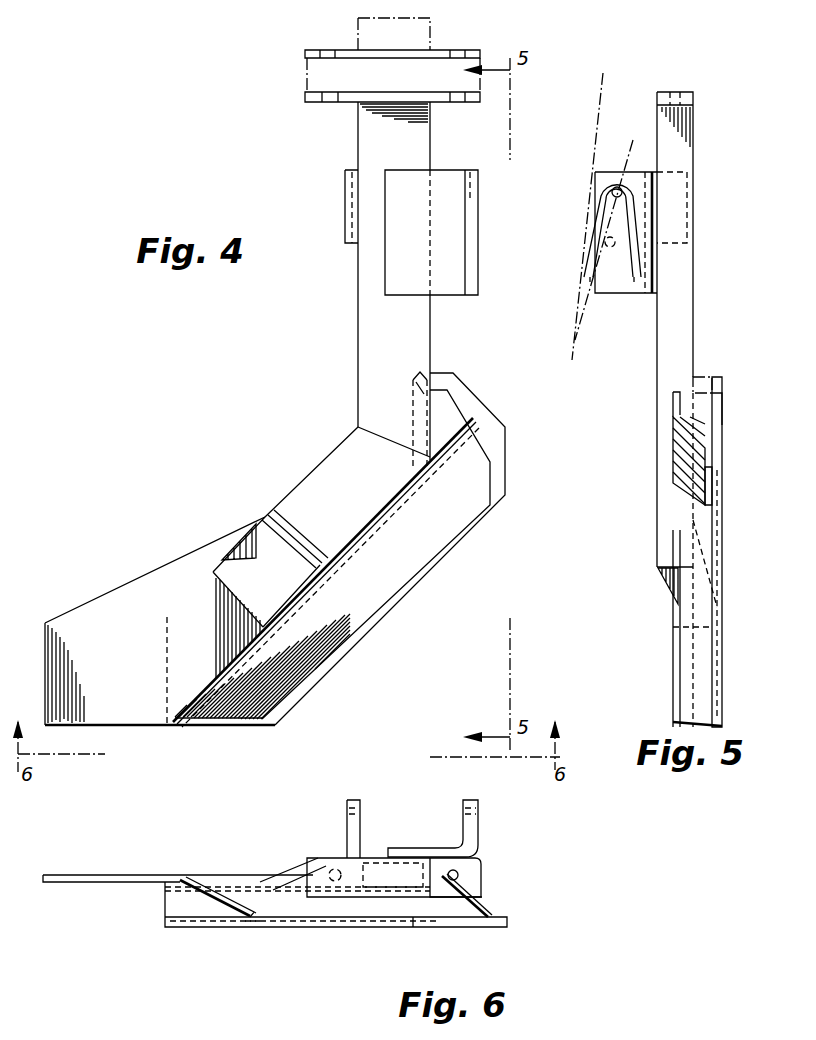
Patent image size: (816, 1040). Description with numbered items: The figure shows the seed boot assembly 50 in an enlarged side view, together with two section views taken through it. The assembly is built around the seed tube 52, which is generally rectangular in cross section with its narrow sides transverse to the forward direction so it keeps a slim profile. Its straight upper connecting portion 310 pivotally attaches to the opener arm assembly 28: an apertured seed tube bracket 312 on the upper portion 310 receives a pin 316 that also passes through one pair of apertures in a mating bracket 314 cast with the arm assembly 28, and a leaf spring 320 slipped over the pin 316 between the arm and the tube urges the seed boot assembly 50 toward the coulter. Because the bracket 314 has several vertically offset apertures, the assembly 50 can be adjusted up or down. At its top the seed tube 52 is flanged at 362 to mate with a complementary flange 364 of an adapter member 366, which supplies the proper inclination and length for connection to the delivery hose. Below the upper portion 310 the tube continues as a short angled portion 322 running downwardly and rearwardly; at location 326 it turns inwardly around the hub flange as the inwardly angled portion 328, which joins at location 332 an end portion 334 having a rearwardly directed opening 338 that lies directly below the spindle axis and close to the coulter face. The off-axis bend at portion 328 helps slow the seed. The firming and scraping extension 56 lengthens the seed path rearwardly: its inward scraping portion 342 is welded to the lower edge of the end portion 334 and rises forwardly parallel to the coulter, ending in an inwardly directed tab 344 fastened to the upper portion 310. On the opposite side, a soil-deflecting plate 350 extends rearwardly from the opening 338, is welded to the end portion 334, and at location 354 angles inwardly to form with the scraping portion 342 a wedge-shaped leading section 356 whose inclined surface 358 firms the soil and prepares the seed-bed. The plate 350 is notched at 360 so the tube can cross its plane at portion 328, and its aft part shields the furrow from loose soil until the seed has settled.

In FIG. 5, the opener arm assembly 28 is at (604, 95).
In FIG. 4, the seed boot assembly 50 is at (258, 340).
In FIG. 6, the seed boot assembly 50 is at (321, 950).
In FIG. 4, the seed tube 52 is at (412, 327).
In FIG. 5, the seed tube 52 is at (693, 240).
In FIG. 4, the firming and scraping extension 56 is at (95, 552).
In FIG. 5, the firming and scraping extension 56 is at (741, 600).
In FIG. 4, the upper connecting portion 310 is at (380, 130).
In FIG. 5, the upper connecting portion 310 is at (667, 320).
In FIG. 6, the upper connecting portion 310 is at (372, 860).
In FIG. 4, the seed tube bracket 312 is at (345, 198).
In FIG. 5, the seed tube bracket 312 is at (595, 175).
In FIG. 6, the seed tube bracket 312 is at (470, 800).
In FIG. 5, the mating bracket 314 is at (585, 285).
In FIG. 5, the pin 316 is at (617, 182).
In FIG. 5, the leaf spring 320 is at (601, 207).
In FIG. 4, the short angled portion 322 is at (345, 440).
In FIG. 5, the short angled portion 322 is at (660, 498).
In FIG. 6, the short angled portion 322 is at (335, 858).
In FIG. 4, the location just beyond the flange 326 is at (268, 515).
In FIG. 5, the location just beyond the flange 326 is at (657, 565).
In FIG. 4, the inwardly angled portion 328 is at (255, 525).
In FIG. 5, the inwardly angled portion 328 is at (660, 575).
In FIG. 6, the inwardly angled portion 328 is at (292, 876).
In FIG. 5, the connection location 332 is at (680, 627).
In FIG. 6, the connection location 332 is at (243, 927).
In FIG. 4, the end portion 334 is at (178, 612).
In FIG. 5, the end portion 334 is at (695, 680).
In FIG. 6, the end portion 334 is at (175, 905).
In FIG. 4, the rearwardly directed opening 338 is at (158, 675).
In FIG. 6, the rearwardly directed opening 338 is at (148, 920).
In FIG. 4, the inward scraping portion 342 is at (470, 523).
In FIG. 5, the inward scraping portion 342 is at (722, 535).
In FIG. 6, the inward scraping portion 342 is at (432, 930).
In FIG. 4, the inwardly directed tab 344 is at (420, 372).
In FIG. 5, the inwardly directed tab 344 is at (715, 370).
In FIG. 4, the soil-deflecting plate 350 is at (78, 613).
In FIG. 5, the soil-deflecting plate 350 is at (673, 655).
In FIG. 6, the soil-deflecting plate 350 is at (118, 875).
In FIG. 4, the angled location of plate 354 is at (172, 727).
In FIG. 4, the wedge-shaped leading section 356 is at (516, 479).
In FIG. 4, the inclined surface 358 is at (402, 557).
In FIG. 5, the inclined surface 358 is at (683, 455).
In FIG. 6, the inclined surface 358 is at (230, 880).
In FIG. 4, the notch 360 is at (230, 565).
In FIG. 4, the seed tube flange 362 is at (305, 97).
In FIG. 4, the complementary flange 364 is at (305, 54).
In FIG. 4, the adapter member 366 is at (358, 33).